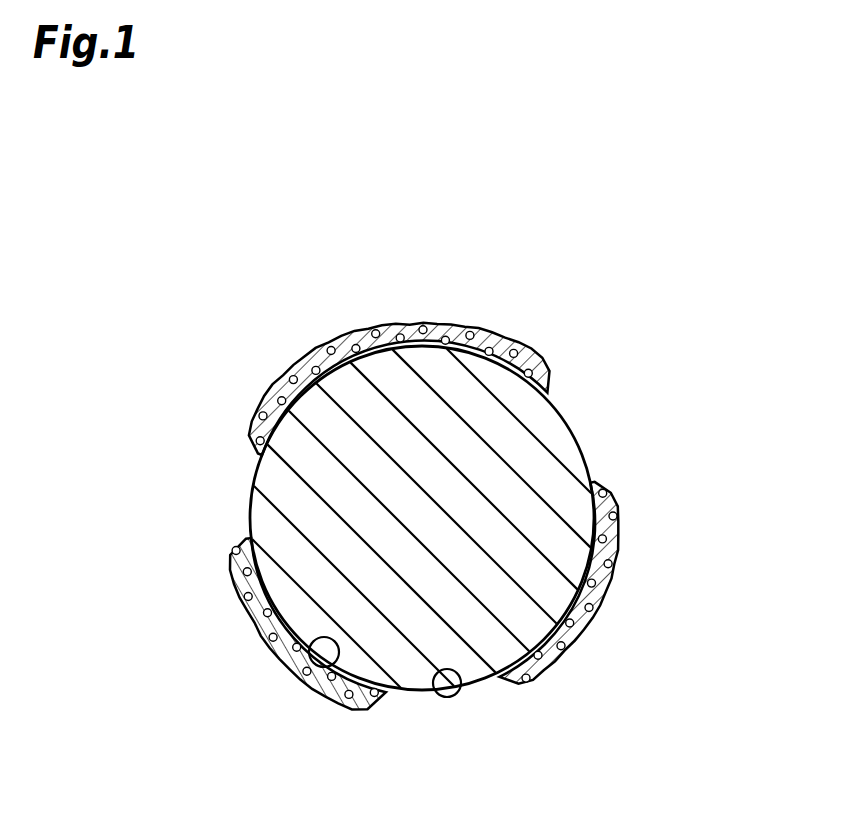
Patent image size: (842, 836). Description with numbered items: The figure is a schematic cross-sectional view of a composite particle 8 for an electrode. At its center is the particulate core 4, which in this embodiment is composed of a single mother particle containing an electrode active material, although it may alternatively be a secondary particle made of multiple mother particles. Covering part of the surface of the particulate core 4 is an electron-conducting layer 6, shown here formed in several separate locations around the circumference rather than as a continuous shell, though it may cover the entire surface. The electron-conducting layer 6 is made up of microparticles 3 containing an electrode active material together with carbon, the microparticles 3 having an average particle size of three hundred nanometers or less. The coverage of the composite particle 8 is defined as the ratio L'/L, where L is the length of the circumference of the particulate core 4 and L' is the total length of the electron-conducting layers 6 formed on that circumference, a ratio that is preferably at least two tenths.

The composite particle for electrode 8 is at (584, 292).
The particulate core 4 is at (555, 437).
The microparticles 3 is at (617, 514).
The electron-conducting layer 6 is at (455, 323).
The length of the circumference of the particulate core L is at (449, 727).
The length of the electron-conducting layer on the circumference L' is at (311, 691).